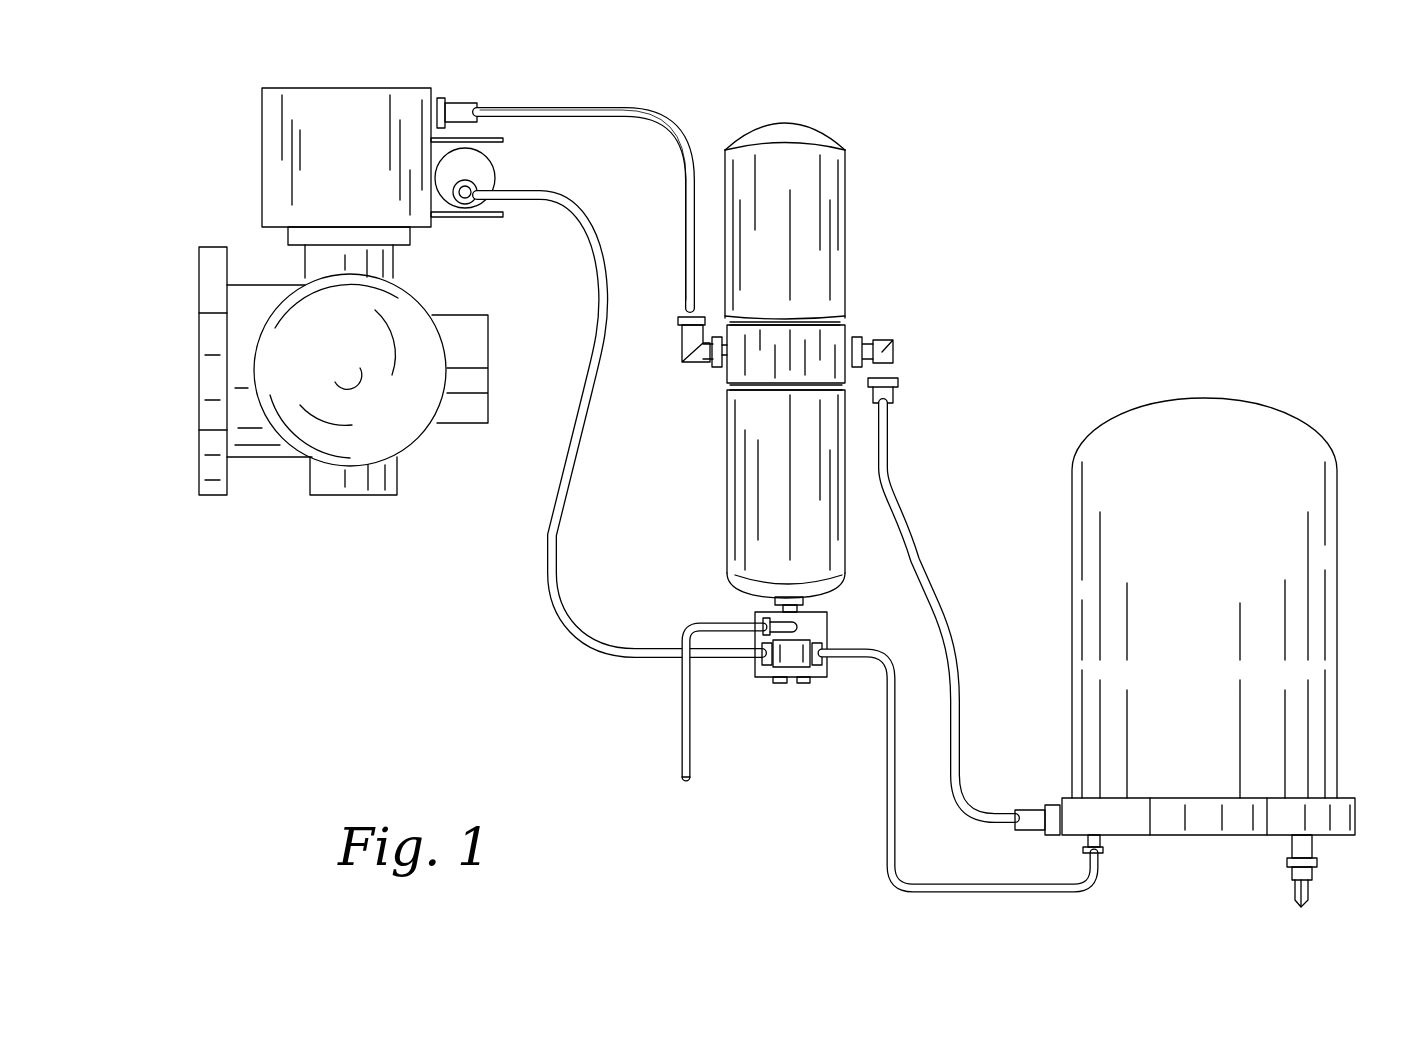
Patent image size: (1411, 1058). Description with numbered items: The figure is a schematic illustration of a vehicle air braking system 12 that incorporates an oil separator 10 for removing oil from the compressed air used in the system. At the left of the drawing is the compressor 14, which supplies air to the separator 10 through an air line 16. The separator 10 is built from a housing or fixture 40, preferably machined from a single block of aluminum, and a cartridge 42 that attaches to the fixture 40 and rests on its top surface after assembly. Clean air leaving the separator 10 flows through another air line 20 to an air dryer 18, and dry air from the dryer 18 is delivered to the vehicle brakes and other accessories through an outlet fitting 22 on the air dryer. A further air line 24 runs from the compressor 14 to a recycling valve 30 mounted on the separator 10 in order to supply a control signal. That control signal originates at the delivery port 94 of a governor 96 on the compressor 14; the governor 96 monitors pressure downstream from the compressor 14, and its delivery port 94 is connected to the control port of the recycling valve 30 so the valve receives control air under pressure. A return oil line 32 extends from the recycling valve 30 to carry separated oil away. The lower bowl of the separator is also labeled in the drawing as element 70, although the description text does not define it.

The oil separator 10 is at (835, 360).
The vehicle air braking system 12 is at (590, 486).
The compressor 14 is at (213, 179).
The air line 16 is at (633, 104).
The air dryer 18 is at (1285, 393).
The air line 20 is at (922, 550).
The outlet fitting 22 is at (1313, 867).
The air line 24 is at (560, 495).
The recycling valve 30 is at (765, 670).
The return oil line 32 is at (680, 708).
The fixture 40 is at (848, 327).
The cartridge 42 is at (827, 203).
The lower filter bowl 70 is at (735, 480).
The delivery port 94 is at (465, 192).
The governor 96 is at (480, 172).